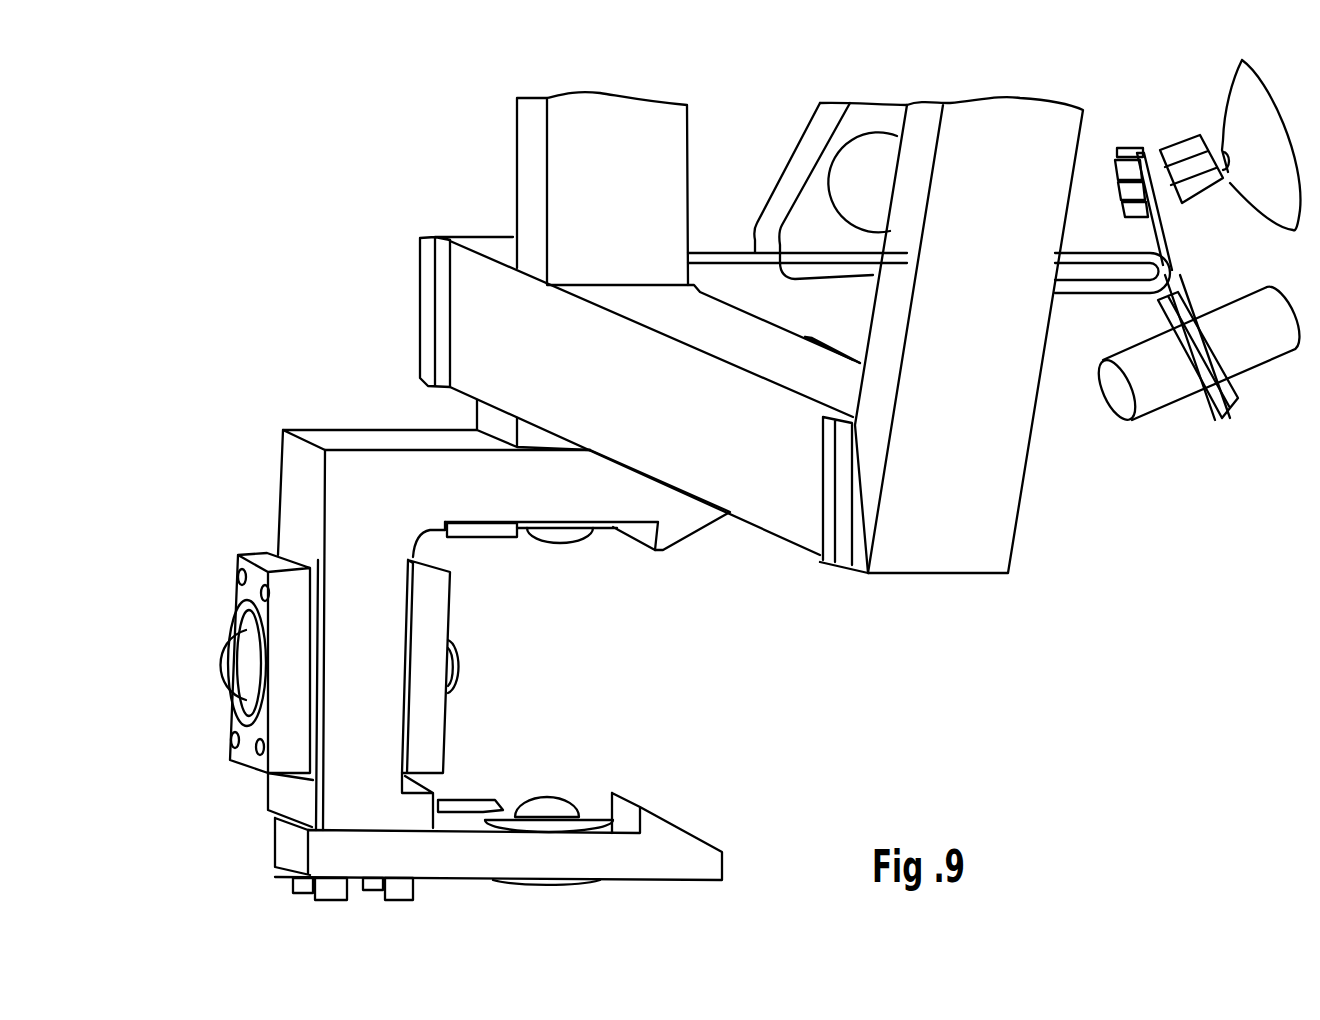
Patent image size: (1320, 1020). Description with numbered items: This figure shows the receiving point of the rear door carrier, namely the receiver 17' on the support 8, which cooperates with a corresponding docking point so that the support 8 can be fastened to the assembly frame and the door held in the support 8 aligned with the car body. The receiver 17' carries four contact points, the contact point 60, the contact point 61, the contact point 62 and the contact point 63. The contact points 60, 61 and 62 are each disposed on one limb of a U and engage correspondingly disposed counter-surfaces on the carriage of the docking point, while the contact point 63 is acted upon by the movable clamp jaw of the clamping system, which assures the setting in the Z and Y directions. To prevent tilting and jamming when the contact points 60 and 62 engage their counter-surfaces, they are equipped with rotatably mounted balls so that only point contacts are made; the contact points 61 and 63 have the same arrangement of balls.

The support 8 is at (998, 551).
The contact point 60 is at (548, 797).
The contact point 61 is at (460, 665).
The contact point 62 is at (555, 537).
The contact point 63 is at (218, 664).
The receiver 17' is at (648, 684).